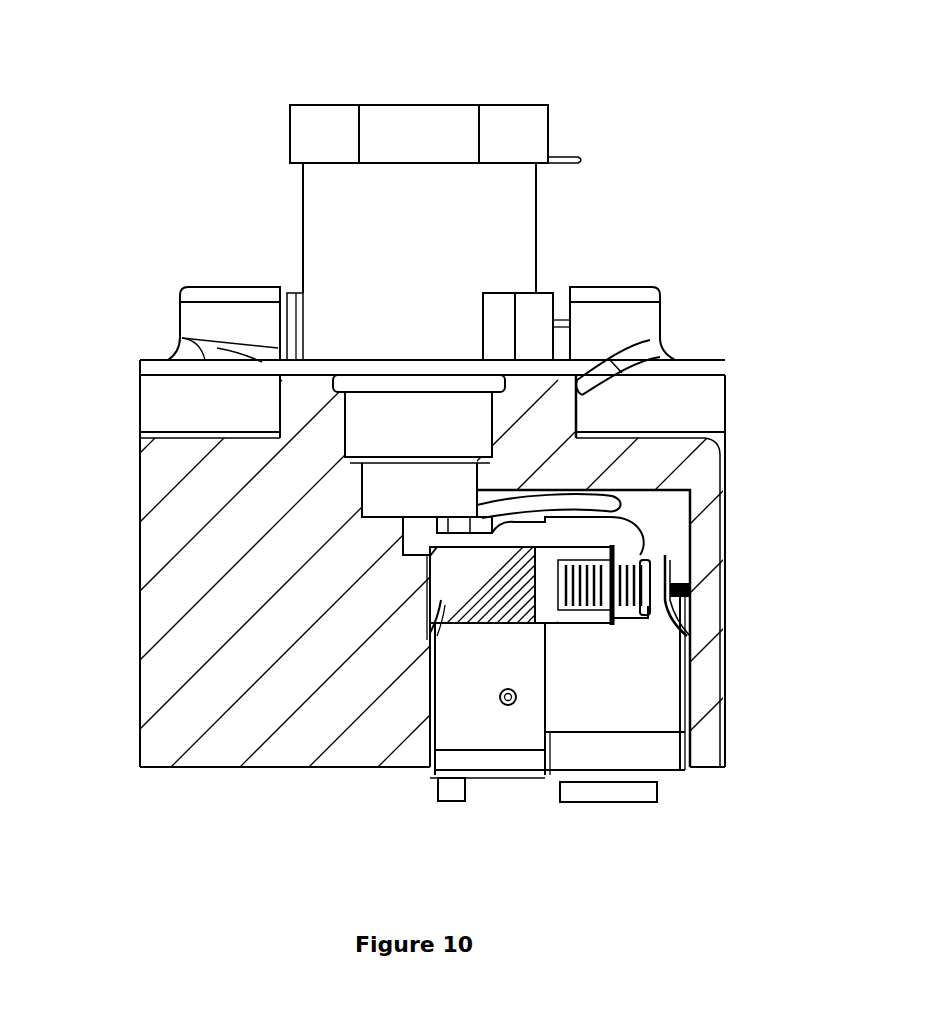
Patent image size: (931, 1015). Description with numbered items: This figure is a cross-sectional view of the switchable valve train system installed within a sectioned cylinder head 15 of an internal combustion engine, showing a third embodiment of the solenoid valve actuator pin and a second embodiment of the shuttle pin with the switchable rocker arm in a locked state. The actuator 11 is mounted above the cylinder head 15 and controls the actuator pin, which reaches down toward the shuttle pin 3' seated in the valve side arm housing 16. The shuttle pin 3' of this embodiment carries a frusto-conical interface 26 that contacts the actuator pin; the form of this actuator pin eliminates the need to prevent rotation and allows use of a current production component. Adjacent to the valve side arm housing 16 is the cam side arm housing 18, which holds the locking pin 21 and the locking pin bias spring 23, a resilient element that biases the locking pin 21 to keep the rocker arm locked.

The actuator 11 is at (403, 123).
The cylinder head 15 is at (160, 473).
The frusto-conical interface 26 is at (432, 573).
The locking pin bias spring 23 is at (617, 557).
The cam side arm housing 18 is at (643, 660).
The locking pin 21 is at (577, 626).
The valve side arm housing 16 is at (488, 715).
The shuttle pin 3' is at (376, 726).